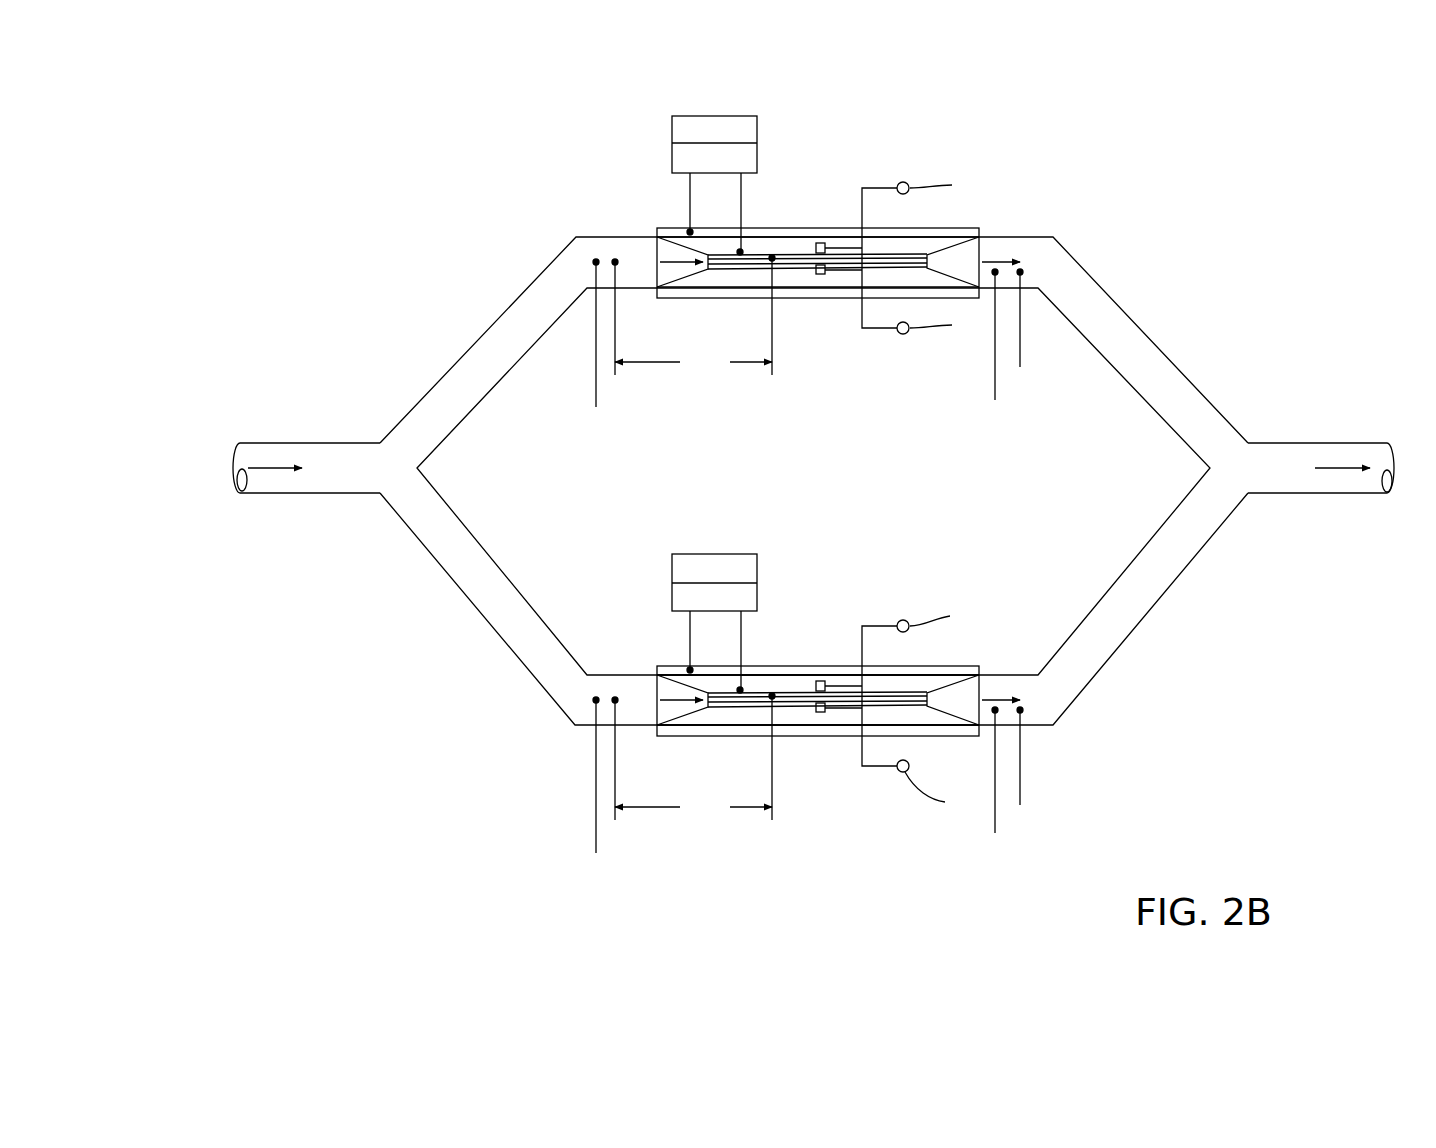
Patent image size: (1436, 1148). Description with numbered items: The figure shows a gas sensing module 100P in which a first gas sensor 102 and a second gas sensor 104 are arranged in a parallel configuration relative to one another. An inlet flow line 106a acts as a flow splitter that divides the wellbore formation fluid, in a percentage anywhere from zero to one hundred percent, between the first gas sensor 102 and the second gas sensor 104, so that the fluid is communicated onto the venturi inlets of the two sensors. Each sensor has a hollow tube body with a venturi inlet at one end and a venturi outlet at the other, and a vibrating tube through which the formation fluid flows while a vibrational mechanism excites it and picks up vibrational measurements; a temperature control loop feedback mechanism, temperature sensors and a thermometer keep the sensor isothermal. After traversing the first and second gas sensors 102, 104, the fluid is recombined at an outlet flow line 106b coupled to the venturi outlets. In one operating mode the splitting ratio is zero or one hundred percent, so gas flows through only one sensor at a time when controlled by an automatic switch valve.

The gas sensing module 100P is at (870, 107).
The first gas sensor 102 is at (826, 375).
The second gas sensor 104 is at (826, 814).
The inlet flow line 106a is at (262, 494).
The outlet flow line 106b is at (1317, 494).